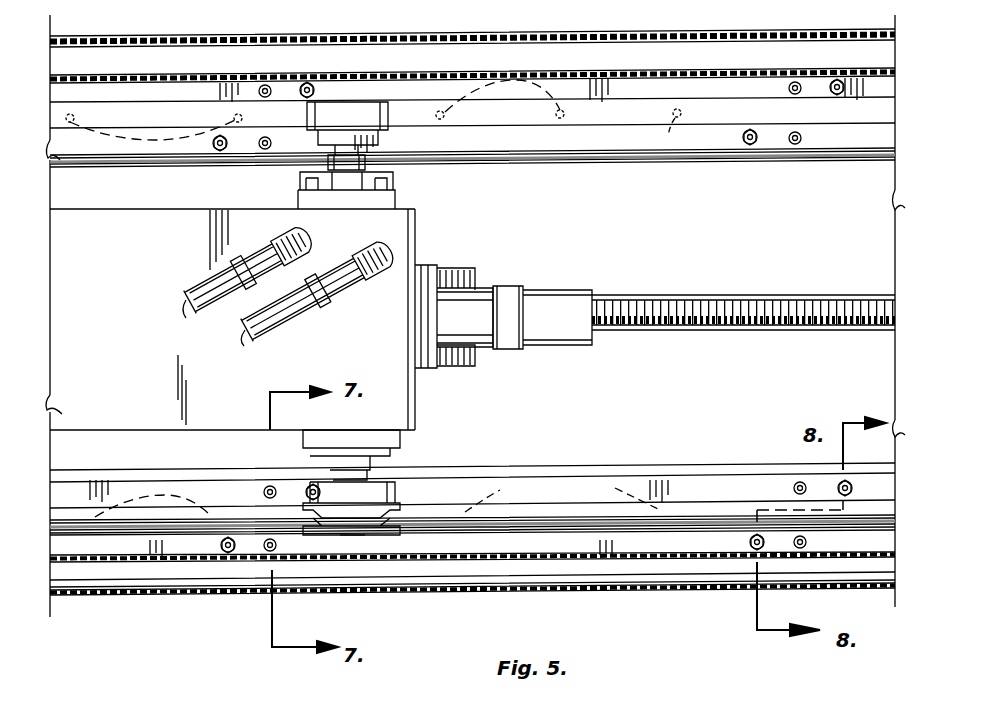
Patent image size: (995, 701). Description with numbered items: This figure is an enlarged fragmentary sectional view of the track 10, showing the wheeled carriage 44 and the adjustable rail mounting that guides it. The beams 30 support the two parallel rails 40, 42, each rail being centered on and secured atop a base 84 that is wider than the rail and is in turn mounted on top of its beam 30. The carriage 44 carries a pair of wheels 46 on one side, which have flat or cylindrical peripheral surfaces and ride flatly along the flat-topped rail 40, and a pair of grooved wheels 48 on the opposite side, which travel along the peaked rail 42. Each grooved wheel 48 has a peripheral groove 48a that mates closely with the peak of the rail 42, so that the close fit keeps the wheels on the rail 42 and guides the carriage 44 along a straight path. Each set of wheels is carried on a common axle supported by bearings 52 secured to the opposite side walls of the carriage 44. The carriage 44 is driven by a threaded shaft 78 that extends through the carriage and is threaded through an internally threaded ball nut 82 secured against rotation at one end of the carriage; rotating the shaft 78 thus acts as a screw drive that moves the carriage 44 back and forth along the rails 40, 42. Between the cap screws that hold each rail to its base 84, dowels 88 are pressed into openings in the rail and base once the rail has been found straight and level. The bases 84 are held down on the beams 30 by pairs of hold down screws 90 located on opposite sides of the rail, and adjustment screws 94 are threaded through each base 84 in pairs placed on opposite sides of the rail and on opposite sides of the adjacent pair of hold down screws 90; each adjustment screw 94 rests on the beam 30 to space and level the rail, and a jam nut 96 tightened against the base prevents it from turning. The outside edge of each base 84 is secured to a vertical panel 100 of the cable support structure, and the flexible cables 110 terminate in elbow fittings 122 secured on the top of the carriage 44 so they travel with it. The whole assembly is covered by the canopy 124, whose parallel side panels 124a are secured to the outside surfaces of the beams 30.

The track 10 is at (220, 28).
The beams 30 is at (648, 46).
The rail 40 is at (597, 108).
The rail 42 is at (505, 520).
The carriage 44 is at (145, 410).
The wheels 46 is at (380, 105).
The grooved wheels 48 is at (395, 503).
The peripheral groove 48a is at (370, 535).
The bearings 52 is at (375, 198).
The threaded shaft 78 is at (770, 295).
The ball nut 82 is at (515, 300).
The base 84 is at (603, 155).
The dowels 88 is at (373, 298).
The hold down screws 90 is at (272, 95).
The adjustment screws 94 is at (310, 85).
The jam nut 96 is at (305, 82).
The vertical panel 100 is at (510, 72).
The flexible cables 110 is at (240, 333).
The elbow fitting 122 is at (350, 245).
The canopy 124 is at (137, 597).
The side panels 124a is at (478, 33).